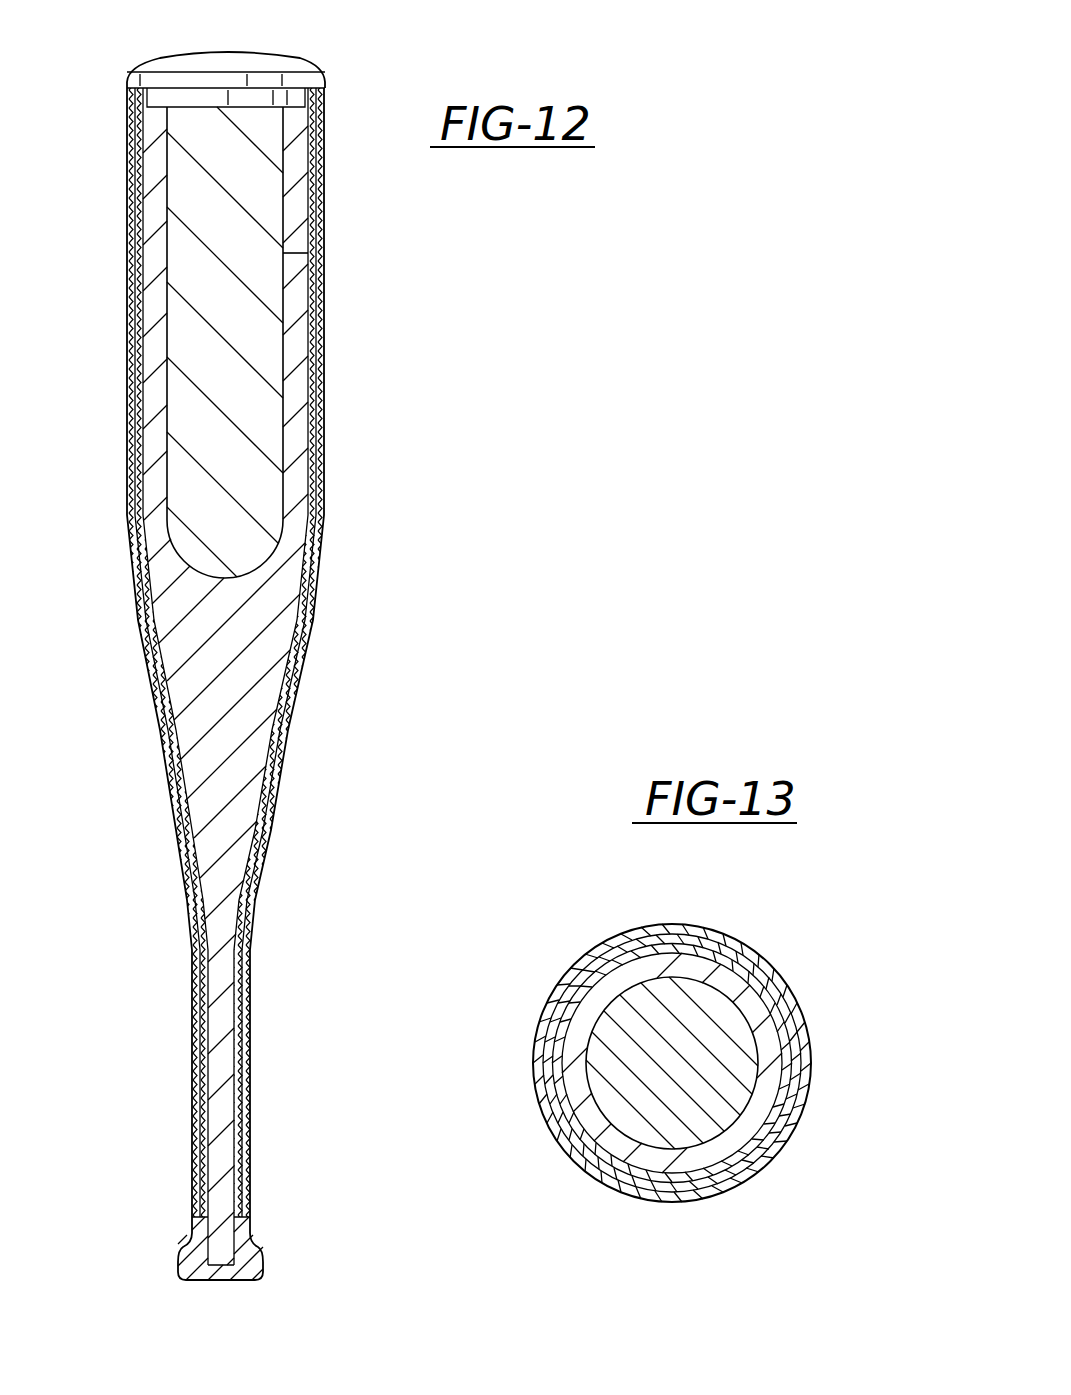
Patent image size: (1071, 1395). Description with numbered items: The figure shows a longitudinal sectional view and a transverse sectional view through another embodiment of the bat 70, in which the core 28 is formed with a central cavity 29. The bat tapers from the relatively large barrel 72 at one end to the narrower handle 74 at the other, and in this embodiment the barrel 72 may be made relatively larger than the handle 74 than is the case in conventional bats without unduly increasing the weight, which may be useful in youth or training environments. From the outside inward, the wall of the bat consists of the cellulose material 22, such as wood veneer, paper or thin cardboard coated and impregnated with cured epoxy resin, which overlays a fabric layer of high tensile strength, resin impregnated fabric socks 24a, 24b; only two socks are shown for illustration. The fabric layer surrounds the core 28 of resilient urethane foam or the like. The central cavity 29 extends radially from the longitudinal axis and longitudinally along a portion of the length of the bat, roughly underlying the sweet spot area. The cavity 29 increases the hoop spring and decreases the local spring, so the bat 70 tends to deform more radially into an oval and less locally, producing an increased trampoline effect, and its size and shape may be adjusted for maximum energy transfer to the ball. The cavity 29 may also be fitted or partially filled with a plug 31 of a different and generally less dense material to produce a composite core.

In FIG. 12, the bat 70 is at (362, 481).
In FIG. 12, the barrel 72 is at (160, 62).
In FIG. 12, the handle 74 is at (203, 1279).
In FIG. 12, the core 28 is at (323, 340).
In FIG. 13, the core 28 is at (727, 958).
In FIG. 12, the central cavity 29 is at (167, 445).
In FIG. 13, the central cavity 29 is at (765, 1065).
In FIG. 12, the plug 31 is at (300, 253).
In FIG. 13, the cellulose material 22 is at (708, 1200).
In FIG. 13, the fabric sock 24a is at (571, 966).
In FIG. 13, the fabric sock 24b is at (556, 1042).